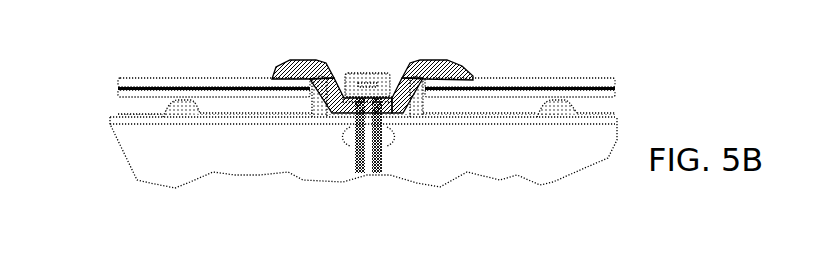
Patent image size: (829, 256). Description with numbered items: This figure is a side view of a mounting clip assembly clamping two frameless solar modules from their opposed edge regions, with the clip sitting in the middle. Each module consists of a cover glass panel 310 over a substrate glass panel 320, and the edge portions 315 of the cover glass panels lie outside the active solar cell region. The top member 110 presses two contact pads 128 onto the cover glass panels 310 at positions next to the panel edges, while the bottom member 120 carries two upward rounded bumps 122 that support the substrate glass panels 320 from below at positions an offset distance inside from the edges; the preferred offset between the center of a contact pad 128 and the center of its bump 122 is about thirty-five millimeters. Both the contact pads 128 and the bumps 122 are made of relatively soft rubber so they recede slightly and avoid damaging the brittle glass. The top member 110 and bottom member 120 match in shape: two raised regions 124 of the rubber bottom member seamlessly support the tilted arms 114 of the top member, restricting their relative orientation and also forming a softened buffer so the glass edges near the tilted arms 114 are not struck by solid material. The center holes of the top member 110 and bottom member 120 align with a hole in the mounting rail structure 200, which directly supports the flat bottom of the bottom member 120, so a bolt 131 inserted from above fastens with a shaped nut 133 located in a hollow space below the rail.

The top member 110 is at (328, 63).
The tilted arms 114 is at (408, 82).
The bottom member 120 is at (433, 116).
The upward rounded bumps 122 is at (173, 113).
The raised regions 124 is at (317, 100).
The contact pads 128 is at (280, 70).
The bolt 131 is at (378, 72).
The shaped nut 133 is at (388, 138).
The mounting rail structure 200 is at (230, 160).
The cover glass panels 310 is at (128, 80).
The edge portions 315 is at (267, 89).
The substrate glass panels 320 is at (120, 93).